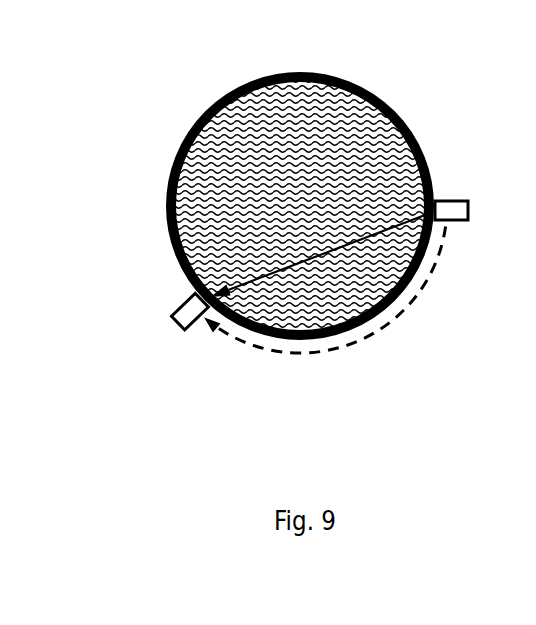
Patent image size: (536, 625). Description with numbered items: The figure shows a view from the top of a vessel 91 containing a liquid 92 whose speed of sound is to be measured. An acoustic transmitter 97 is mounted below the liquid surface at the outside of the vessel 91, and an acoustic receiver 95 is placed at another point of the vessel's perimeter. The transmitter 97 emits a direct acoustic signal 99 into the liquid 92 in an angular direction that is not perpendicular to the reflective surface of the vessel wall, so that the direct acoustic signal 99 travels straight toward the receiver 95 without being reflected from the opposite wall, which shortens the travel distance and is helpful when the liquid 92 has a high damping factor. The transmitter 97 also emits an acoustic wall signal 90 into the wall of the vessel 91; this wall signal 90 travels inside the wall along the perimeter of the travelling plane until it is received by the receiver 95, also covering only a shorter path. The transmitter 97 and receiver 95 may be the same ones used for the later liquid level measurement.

The acoustic wall signal 90 is at (358, 343).
The vessel 91 is at (200, 113).
The liquid 92 is at (353, 125).
The acoustic receiver 95 is at (182, 321).
The acoustic transmitter 97 is at (455, 219).
The direct acoustic signal 99 is at (308, 259).